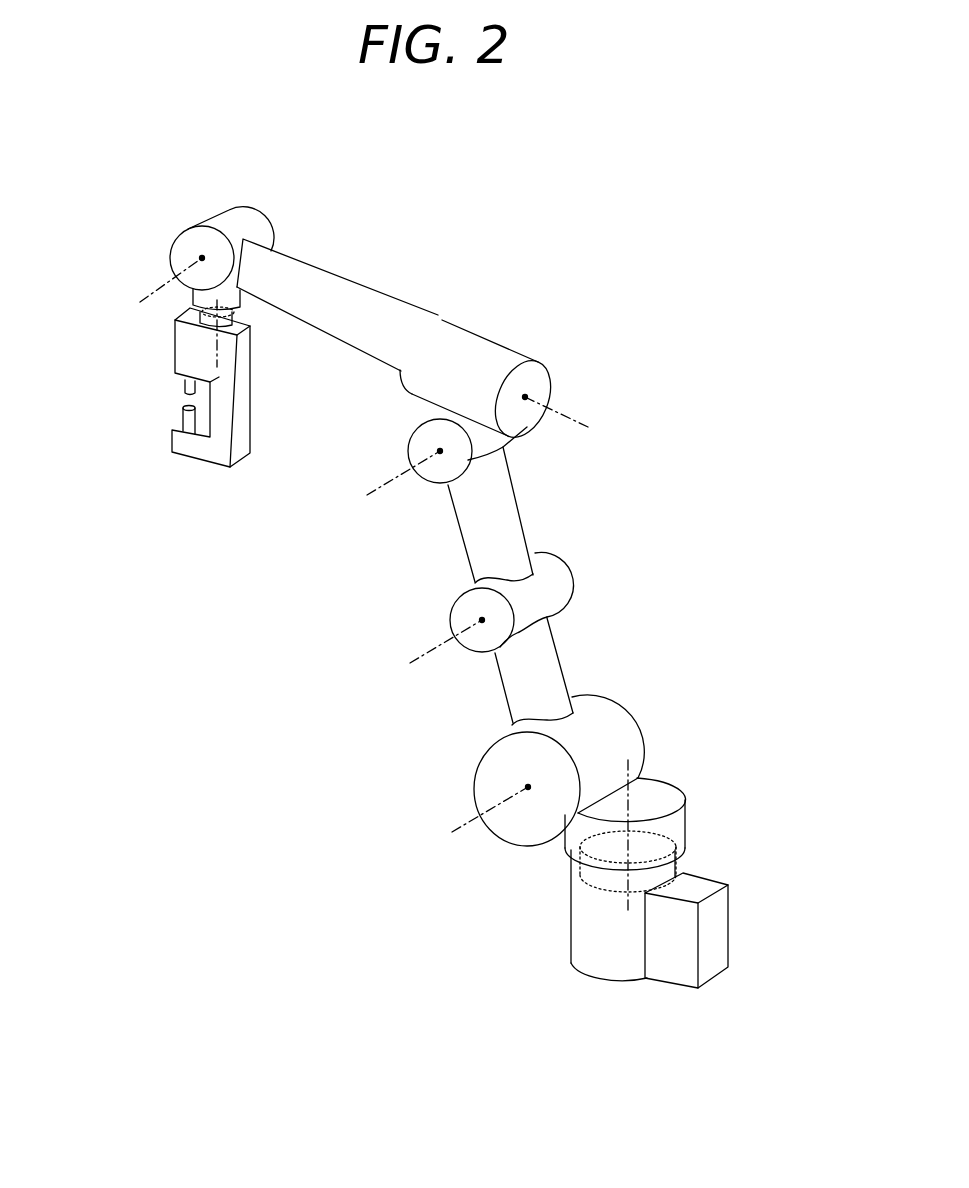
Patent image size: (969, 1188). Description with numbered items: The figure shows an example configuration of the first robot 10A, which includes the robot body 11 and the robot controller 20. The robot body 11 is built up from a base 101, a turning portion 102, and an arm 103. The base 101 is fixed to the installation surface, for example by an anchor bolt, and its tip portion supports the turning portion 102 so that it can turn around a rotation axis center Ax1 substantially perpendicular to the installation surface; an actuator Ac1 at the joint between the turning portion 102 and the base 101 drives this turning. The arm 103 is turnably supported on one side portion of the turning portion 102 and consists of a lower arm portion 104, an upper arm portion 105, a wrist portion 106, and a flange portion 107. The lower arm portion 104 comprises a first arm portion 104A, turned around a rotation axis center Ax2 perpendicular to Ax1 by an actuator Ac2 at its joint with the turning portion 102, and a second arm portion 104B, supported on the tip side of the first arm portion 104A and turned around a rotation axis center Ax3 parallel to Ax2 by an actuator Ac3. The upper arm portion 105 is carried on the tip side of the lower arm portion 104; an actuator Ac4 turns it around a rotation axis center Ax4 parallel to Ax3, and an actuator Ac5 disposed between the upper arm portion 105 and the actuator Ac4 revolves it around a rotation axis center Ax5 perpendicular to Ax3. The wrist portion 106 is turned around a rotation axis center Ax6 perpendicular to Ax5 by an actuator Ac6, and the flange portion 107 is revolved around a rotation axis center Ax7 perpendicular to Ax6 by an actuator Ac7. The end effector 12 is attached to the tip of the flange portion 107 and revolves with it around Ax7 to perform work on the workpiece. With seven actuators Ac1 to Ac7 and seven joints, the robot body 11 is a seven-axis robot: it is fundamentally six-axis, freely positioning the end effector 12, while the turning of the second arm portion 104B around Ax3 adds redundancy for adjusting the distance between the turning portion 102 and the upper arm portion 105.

The first robot 10A is at (770, 305).
The robot body 11 is at (365, 578).
The end effector 12 is at (172, 452).
The robot controller 20 is at (720, 933).
The base 101 is at (585, 930).
The turning portion 102 is at (678, 830).
The arm 103 is at (636, 403).
The lower arm portion 104 is at (580, 554).
The first arm portion 104A is at (547, 662).
The second arm portion 104B is at (503, 488).
The upper arm portion 105 is at (352, 313).
The wrist portion 106 is at (183, 300).
The flange portion 107 is at (177, 320).
The actuator Ac1 is at (573, 873).
The actuator Ac2 is at (497, 770).
The actuator Ac3 is at (557, 590).
The actuator Ac4 is at (420, 437).
The actuator Ac5 is at (480, 343).
The actuator Ac6 is at (230, 227).
The actuator Ac7 is at (233, 314).
The rotation axis center Ax1 is at (637, 810).
The rotation axis center Ax2 is at (505, 800).
The rotation axis center Ax3 is at (467, 652).
The rotation axis center Ax4 is at (420, 482).
The rotation axis center Ax5 is at (555, 407).
The rotation axis center Ax6 is at (155, 282).
The rotation axis center Ax7 is at (228, 348).